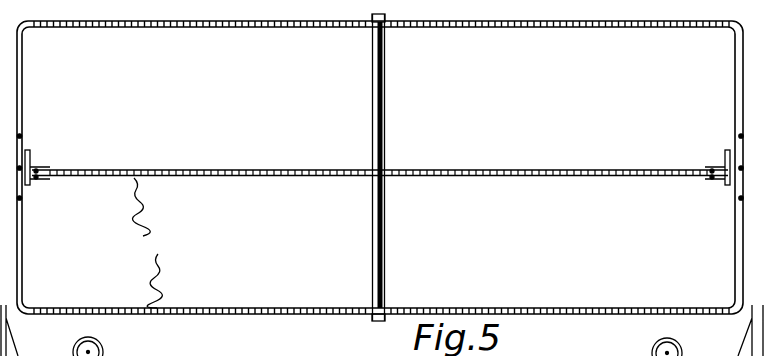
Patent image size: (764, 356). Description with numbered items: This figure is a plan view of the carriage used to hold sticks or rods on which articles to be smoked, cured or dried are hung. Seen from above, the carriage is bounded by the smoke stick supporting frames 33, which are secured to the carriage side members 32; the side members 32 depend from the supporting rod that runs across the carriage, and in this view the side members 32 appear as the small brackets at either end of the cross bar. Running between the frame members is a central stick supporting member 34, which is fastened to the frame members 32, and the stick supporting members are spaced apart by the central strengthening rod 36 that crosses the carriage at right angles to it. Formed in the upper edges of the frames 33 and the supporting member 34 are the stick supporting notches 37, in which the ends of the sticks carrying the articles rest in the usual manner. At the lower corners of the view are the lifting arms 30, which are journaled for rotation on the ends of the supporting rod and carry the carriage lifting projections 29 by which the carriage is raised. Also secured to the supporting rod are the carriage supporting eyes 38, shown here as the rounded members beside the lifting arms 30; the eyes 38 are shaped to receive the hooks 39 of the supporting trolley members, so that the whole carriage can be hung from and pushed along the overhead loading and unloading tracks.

The carriage lifting projection 29 is at (758, 282).
The lifting arm 30 is at (17, 351).
The carriage side member 32 is at (30, 180).
The smoke stick supporting frame 33 is at (247, 312).
The central stick supporting member 34 is at (293, 170).
The central strengthening rod 36 is at (385, 112).
The stick supporting notch 37 is at (148, 243).
The carriage supporting eye 38 is at (104, 349).
The hook 39 is at (8, 286).